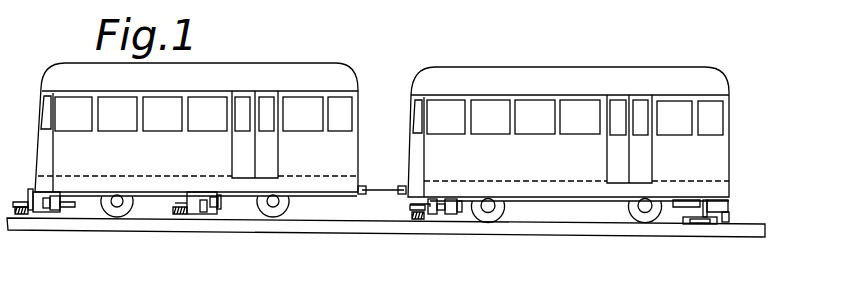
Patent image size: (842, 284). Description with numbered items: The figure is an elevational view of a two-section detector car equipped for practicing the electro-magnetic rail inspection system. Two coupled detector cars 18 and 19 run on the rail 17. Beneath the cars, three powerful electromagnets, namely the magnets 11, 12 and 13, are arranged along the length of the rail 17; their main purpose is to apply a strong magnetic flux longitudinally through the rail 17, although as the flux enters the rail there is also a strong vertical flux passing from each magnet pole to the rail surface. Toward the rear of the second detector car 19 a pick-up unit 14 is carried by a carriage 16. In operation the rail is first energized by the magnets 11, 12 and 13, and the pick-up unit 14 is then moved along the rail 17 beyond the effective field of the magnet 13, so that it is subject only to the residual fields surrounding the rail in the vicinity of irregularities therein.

The magnet 11 is at (47, 214).
The magnet 12 is at (210, 215).
The magnet 13 is at (447, 214).
The pick-up unit 14 is at (707, 226).
The carriage 16 is at (725, 223).
The rail 17 is at (335, 227).
The detector car 18 is at (323, 75).
The detector car 19 is at (445, 77).